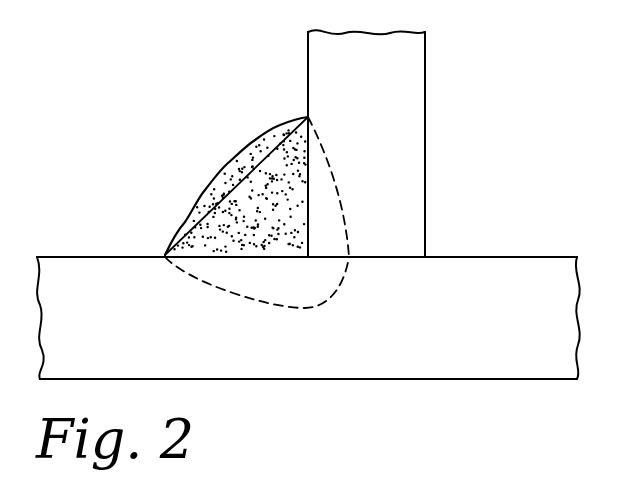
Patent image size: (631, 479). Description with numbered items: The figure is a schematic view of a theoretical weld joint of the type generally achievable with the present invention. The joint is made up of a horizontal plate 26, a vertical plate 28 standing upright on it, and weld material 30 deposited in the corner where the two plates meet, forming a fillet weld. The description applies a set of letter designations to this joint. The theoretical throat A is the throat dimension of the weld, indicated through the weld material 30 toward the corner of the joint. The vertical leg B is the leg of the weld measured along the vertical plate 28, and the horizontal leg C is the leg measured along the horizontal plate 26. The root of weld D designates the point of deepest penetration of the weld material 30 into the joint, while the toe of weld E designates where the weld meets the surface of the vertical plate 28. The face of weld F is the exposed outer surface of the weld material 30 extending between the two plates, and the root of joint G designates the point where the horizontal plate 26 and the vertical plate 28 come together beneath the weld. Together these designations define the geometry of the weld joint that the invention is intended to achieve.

The horizontal plate 26 is at (490, 277).
The vertical plate 28 is at (410, 70).
The weld material 30 is at (188, 217).
The theoretical throat A is at (307, 255).
The vertical leg B is at (312, 117).
The horizontal leg C is at (165, 259).
The root of weld D is at (350, 258).
The toe of weld E is at (307, 117).
The face of weld F is at (204, 190).
The root of joint G is at (307, 256).